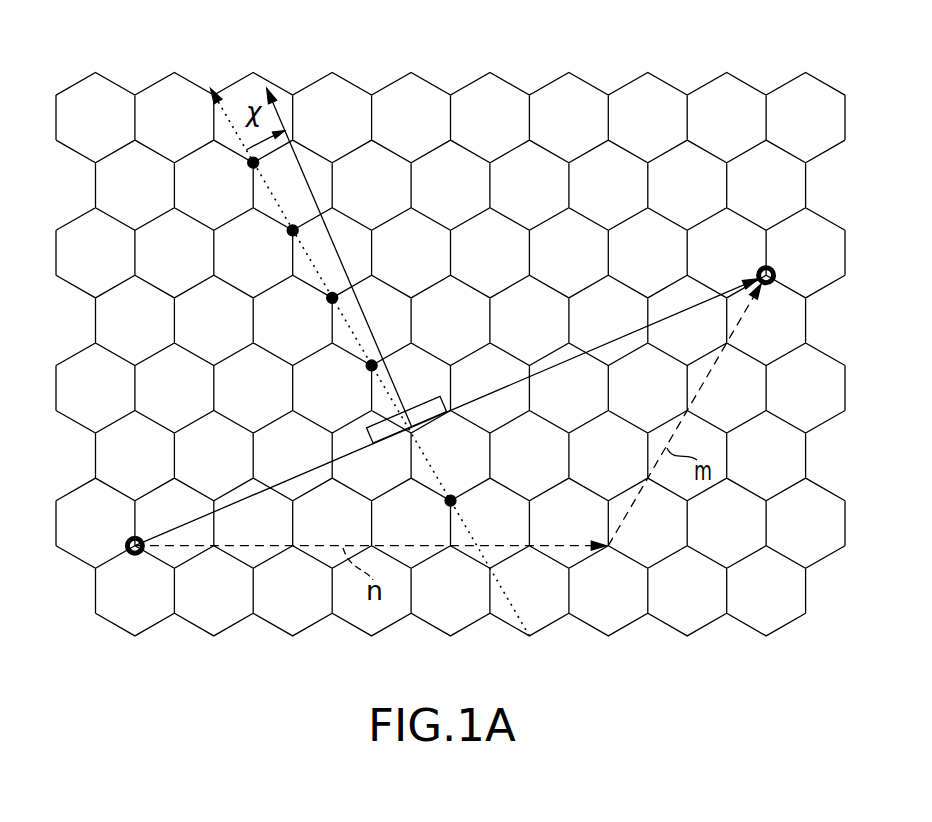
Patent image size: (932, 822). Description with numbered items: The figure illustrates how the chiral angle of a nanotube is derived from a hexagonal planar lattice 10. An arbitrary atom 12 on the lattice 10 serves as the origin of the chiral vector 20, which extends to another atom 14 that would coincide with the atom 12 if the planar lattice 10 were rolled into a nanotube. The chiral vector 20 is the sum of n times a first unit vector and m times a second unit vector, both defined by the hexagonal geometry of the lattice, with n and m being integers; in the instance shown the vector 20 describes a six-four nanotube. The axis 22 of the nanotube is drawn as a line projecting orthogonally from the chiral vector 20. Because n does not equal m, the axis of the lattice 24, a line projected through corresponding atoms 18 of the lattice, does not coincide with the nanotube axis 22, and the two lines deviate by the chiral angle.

The planar lattice 10 is at (845, 402).
The atom 12 is at (134, 556).
The atom 14 is at (775, 270).
The corresponding atoms 18 is at (291, 232).
The chiral vector 20 is at (623, 336).
The axis of the nanotube 22 is at (300, 166).
The axis of the lattice 24 is at (237, 135).